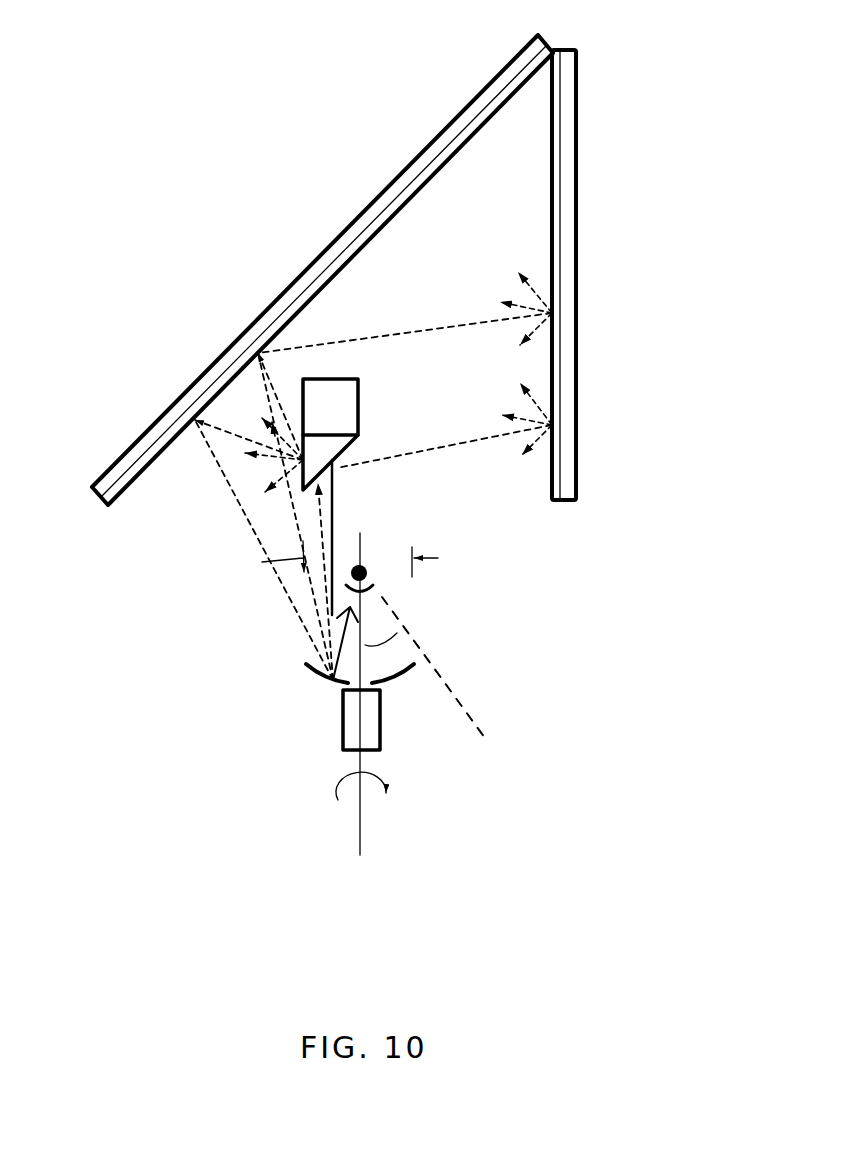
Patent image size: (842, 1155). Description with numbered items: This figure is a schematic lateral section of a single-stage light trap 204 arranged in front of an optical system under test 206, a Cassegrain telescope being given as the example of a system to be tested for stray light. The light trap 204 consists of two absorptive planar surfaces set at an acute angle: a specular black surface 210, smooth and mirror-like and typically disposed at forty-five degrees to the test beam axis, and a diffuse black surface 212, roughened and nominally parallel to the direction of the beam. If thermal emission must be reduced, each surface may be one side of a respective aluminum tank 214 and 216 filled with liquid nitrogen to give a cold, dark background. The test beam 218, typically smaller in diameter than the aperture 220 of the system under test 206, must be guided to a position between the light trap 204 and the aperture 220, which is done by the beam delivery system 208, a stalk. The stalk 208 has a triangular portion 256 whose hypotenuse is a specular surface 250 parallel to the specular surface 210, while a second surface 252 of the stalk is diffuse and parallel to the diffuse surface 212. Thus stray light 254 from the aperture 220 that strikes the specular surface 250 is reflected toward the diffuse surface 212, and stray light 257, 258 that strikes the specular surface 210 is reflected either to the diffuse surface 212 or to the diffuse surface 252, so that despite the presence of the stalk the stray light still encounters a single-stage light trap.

The single-stage light-trap 204 is at (422, 270).
The optical system under test 206 is at (497, 770).
The test beam delivery system (beam delivery stalk) 208 is at (381, 432).
The specular black surface 210 is at (402, 197).
The diffuse black surface 212 is at (629, 275).
The aluminum tank (specular surface) 214 is at (322, 270).
The aluminum tank (diffuse surface) 216 is at (573, 253).
The test beam 218 is at (335, 500).
The aperture 220 is at (388, 557).
The specular surface of the stalk 250 is at (332, 465).
The diffuse surface of the stalk 252 is at (301, 415).
The stray light 254 is at (320, 515).
The triangular portion of the stalk 256 is at (338, 469).
The stray light 257 is at (227, 483).
The stray light 258 is at (310, 593).